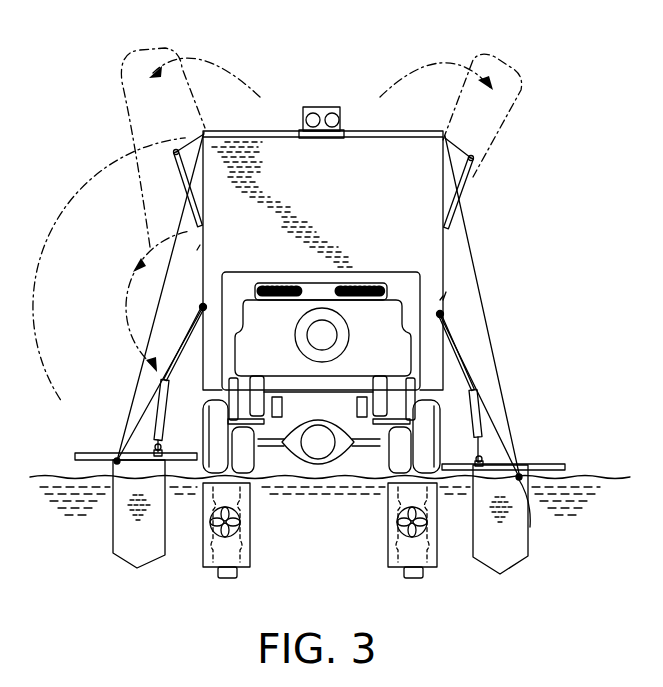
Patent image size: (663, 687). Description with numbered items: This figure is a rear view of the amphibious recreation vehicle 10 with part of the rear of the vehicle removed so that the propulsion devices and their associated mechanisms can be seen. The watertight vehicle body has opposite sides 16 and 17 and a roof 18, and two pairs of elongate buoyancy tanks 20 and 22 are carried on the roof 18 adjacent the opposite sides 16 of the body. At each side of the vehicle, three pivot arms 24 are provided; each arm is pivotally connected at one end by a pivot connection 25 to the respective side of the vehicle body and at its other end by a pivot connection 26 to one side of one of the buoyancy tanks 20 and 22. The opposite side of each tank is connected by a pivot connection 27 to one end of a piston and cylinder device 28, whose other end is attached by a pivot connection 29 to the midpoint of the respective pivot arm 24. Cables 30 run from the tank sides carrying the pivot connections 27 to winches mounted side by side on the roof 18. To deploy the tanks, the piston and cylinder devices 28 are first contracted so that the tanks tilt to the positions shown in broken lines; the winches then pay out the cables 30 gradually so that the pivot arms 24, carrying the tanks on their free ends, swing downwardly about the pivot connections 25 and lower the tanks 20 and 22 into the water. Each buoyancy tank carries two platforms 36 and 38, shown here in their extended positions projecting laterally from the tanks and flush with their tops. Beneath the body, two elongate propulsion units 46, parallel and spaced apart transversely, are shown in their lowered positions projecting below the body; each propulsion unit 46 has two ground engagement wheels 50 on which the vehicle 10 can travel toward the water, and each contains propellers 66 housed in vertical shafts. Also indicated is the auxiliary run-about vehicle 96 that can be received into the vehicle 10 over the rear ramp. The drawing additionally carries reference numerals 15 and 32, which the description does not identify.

The amphibious recreation vehicle 10 is at (512, 251).
The ground surface 15 is at (390, 485).
The opposite sides 16 is at (446, 302).
The side of vehicle body 17 is at (197, 250).
The roof 18 is at (388, 131).
The buoyancy tank 20 is at (505, 558).
The buoyancy tank 22 is at (122, 543).
The pivot arm 24 is at (465, 363).
The pivot connection 25 is at (443, 315).
The pivot connection 26 is at (532, 527).
The pivot connection 27 is at (477, 158).
The piston and cylinder device 28 is at (468, 184).
The pivot connection 29 is at (472, 388).
The cable 30 is at (487, 290).
The lights 32 is at (332, 107).
The platform 36 is at (86, 454).
The platform 38 is at (180, 458).
The propulsion unit 46 is at (370, 546).
The ground engagement wheel 50 is at (238, 574).
The propeller 66 is at (242, 522).
The auxiliary vehicle 96 is at (368, 268).